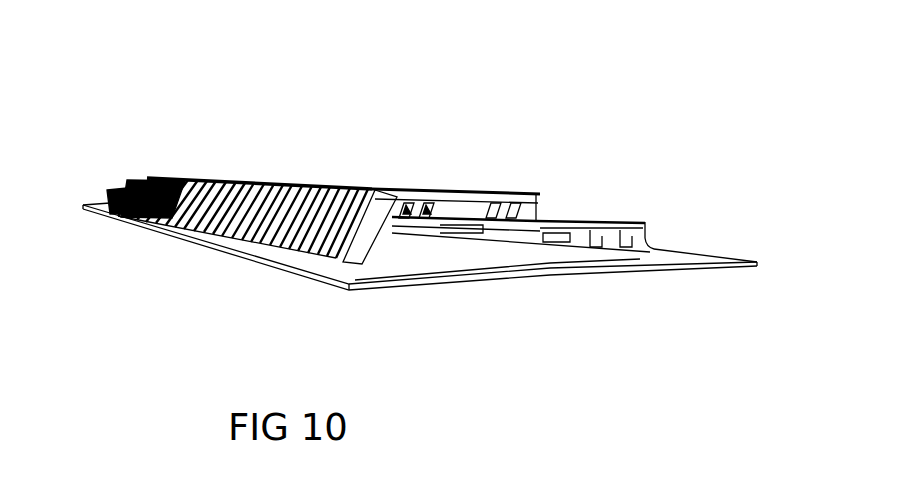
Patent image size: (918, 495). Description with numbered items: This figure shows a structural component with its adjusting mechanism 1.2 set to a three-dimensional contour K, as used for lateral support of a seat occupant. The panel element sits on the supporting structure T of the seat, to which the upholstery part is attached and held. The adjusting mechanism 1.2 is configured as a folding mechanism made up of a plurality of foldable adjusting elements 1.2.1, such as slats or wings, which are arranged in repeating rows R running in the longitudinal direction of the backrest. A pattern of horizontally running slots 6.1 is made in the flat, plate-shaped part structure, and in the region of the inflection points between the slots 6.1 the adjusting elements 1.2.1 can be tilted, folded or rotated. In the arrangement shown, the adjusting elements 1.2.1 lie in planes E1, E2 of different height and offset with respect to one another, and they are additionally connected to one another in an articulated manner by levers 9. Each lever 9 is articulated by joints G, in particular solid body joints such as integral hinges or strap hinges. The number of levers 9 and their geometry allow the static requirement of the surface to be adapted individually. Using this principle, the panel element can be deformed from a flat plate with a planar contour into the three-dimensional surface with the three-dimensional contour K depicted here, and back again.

The adjusting elements 1.2.1 is at (243, 182).
The adjusting mechanism 1.2 is at (498, 159).
The contour K is at (458, 131).
The lever 9 is at (357, 188).
The joint G is at (383, 225).
The row R is at (371, 239).
The slot 6.1 is at (568, 240).
The plane E1 is at (657, 222).
The plane E2 is at (544, 194).
The supporting structure T is at (693, 264).